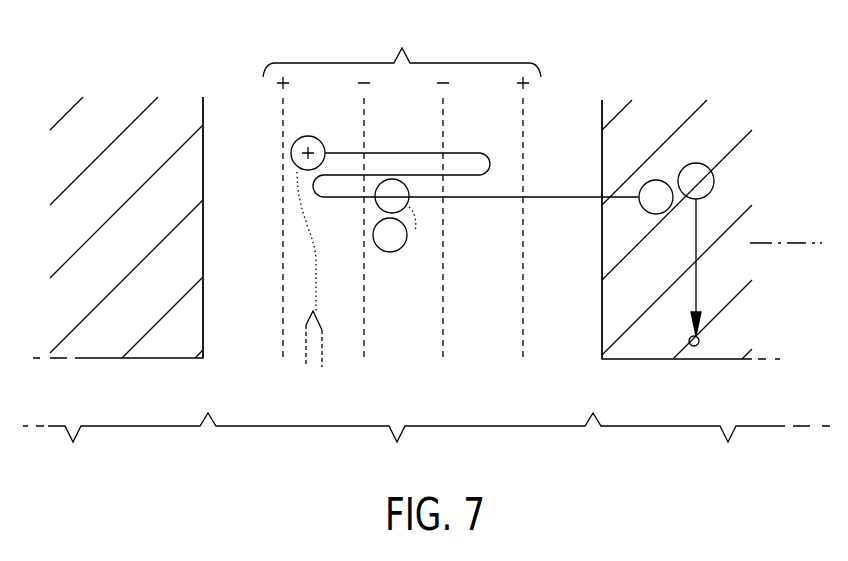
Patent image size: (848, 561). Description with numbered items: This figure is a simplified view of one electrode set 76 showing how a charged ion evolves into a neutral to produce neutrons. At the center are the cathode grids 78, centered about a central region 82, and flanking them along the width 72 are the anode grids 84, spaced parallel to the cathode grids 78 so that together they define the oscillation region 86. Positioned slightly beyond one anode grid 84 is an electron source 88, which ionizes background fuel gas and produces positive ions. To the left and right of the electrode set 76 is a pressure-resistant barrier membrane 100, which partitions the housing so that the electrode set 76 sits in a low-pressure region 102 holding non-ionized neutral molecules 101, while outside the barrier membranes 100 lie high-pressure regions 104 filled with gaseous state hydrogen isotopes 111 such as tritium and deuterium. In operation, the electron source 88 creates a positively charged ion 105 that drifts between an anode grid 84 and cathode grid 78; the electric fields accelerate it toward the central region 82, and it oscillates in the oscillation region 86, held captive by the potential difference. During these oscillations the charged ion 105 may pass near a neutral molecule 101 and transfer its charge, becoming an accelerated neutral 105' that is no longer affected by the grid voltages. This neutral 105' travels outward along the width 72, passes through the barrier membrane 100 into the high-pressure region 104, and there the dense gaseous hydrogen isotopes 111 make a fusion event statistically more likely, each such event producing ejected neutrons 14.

The ejected neutrons 14 is at (699, 345).
The width 72 is at (790, 243).
The electrode set 76 is at (573, 69).
The cathode grids 78 is at (362, 322).
The central region 82 is at (389, 330).
The anode grids 84 is at (282, 327).
The oscillation region 86 is at (402, 57).
The electron source 88 is at (310, 317).
The barrier membrane 100 is at (203, 150).
The neutral molecule 101 is at (402, 247).
The low-pressure region 102 is at (426, 441).
The high-pressure region 104 is at (137, 254).
The charged ion 105 is at (433, 161).
The neutral 105' is at (604, 211).
The gaseous state hydrogen isotopes 111 is at (698, 163).